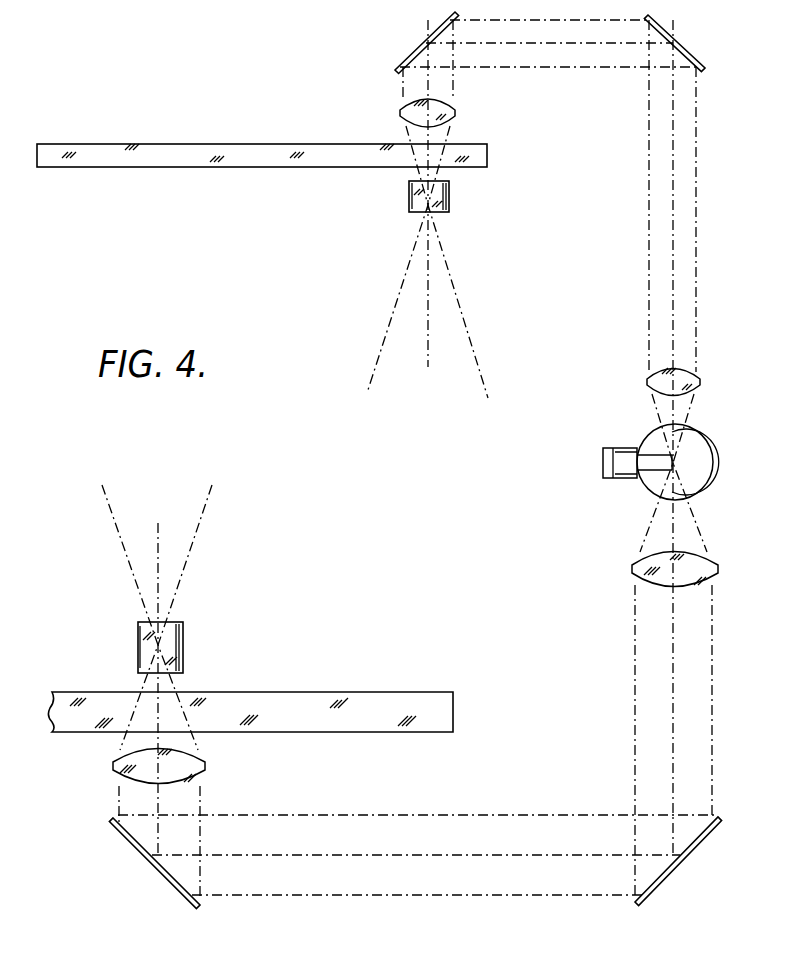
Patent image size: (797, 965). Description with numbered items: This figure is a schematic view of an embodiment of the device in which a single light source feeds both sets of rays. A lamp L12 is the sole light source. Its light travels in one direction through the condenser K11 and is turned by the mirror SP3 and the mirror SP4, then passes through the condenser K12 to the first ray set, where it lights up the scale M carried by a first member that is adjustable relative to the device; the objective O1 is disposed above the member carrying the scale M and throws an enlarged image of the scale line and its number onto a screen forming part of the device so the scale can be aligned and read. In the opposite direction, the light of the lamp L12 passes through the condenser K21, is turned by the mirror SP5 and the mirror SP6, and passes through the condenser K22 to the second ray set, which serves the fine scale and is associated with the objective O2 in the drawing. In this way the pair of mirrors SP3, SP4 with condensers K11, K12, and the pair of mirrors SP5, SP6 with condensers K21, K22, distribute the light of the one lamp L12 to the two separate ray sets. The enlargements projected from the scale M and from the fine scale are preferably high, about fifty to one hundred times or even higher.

The mirror SP6 is at (412, 52).
The mirror SP5 is at (705, 55).
The mirror SP4 is at (148, 856).
The mirror SP3 is at (675, 863).
The condenser K22 is at (447, 114).
The condenser K21 is at (647, 382).
The condenser K12 is at (205, 765).
The condenser K11 is at (632, 570).
The lamp L12 is at (605, 478).
The objective O1 is at (183, 645).
The objective O2 is at (449, 197).
The scale M is at (410, 706).